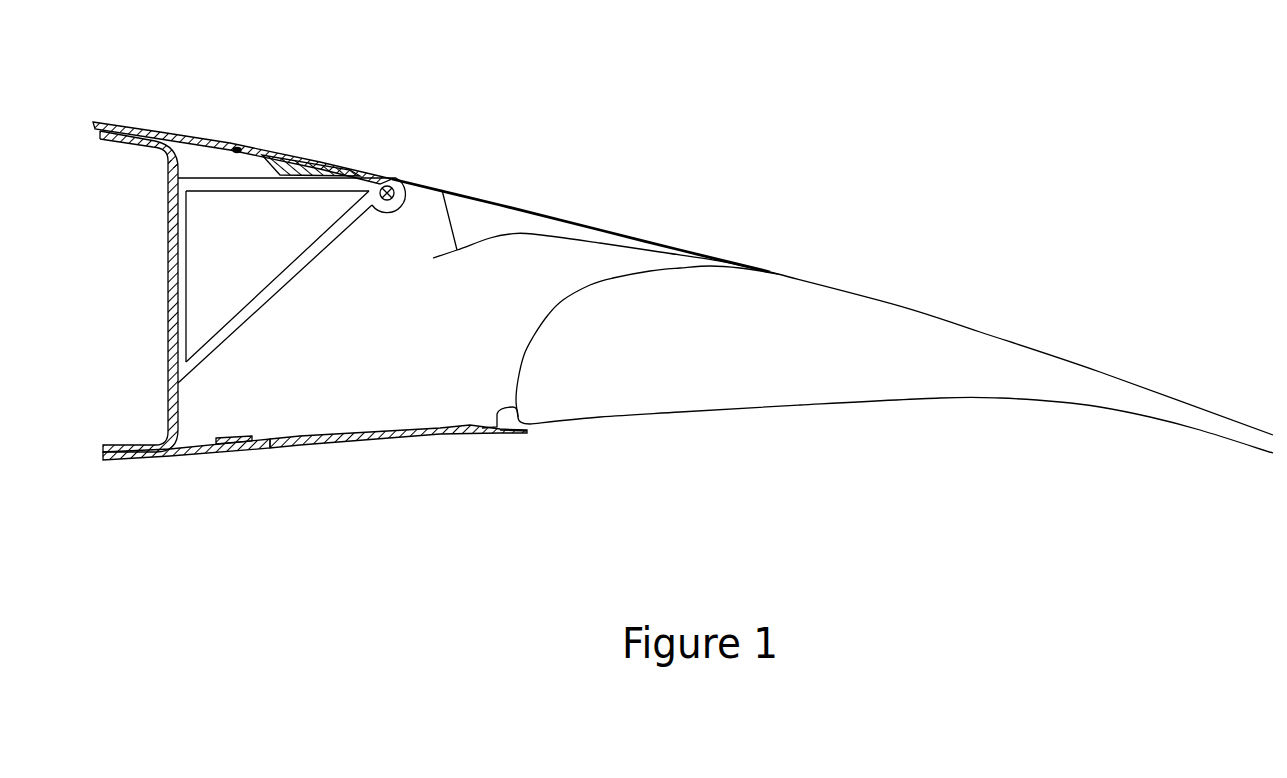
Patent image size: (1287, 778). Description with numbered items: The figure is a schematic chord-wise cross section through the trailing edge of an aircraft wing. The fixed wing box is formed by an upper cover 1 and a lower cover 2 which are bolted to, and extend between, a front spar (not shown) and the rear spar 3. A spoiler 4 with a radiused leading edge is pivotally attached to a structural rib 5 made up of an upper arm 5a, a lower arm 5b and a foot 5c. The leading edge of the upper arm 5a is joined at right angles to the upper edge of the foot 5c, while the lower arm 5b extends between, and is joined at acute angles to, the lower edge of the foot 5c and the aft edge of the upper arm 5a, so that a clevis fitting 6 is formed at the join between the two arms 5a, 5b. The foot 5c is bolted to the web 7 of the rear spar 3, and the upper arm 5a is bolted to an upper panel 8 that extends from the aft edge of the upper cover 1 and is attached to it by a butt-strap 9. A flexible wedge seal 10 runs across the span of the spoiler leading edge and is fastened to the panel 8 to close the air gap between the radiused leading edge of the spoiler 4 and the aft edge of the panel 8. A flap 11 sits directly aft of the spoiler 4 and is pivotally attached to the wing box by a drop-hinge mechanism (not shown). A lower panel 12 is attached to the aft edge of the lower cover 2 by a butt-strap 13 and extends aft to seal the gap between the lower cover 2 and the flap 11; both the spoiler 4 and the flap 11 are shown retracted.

The upper cover 1 is at (115, 124).
The lower cover 2 is at (130, 458).
The rear spar 3 is at (139, 291).
The spoiler 4 is at (587, 221).
The structural rib 5 is at (287, 280).
The upper arm 5a is at (253, 189).
The lower arm 5b is at (252, 317).
The foot 5c is at (187, 250).
The clevis fitting 6 is at (404, 218).
The web 7 is at (172, 323).
The upper panel 8 is at (292, 165).
The butt-strap 9 is at (233, 151).
The flexible wedge seal 10 is at (374, 173).
The flap 11 is at (940, 326).
The lower panel 12 is at (308, 450).
The butt-strap 13 is at (243, 438).